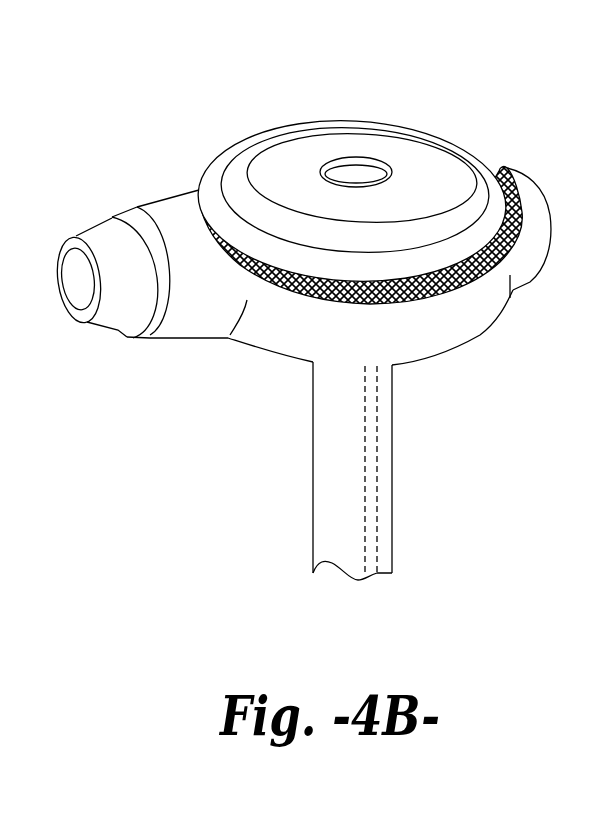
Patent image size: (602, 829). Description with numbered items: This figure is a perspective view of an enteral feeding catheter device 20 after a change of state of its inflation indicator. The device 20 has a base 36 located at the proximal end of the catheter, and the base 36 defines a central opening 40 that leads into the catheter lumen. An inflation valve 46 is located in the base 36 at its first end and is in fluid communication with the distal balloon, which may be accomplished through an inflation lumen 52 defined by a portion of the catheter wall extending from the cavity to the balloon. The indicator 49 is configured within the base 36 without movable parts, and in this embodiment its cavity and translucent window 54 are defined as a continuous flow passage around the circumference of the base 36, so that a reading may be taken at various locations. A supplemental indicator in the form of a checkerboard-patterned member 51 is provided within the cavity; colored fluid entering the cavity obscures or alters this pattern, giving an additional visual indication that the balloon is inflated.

The enteral feeding catheter device 20 is at (321, 305).
The base 36 is at (291, 337).
The opening 40 is at (353, 185).
The inflation valve 46 is at (165, 240).
The indicator 49 is at (516, 163).
The patterned member 51 is at (522, 233).
The inflation lumen 52 is at (363, 487).
The translucent window 54 is at (370, 307).